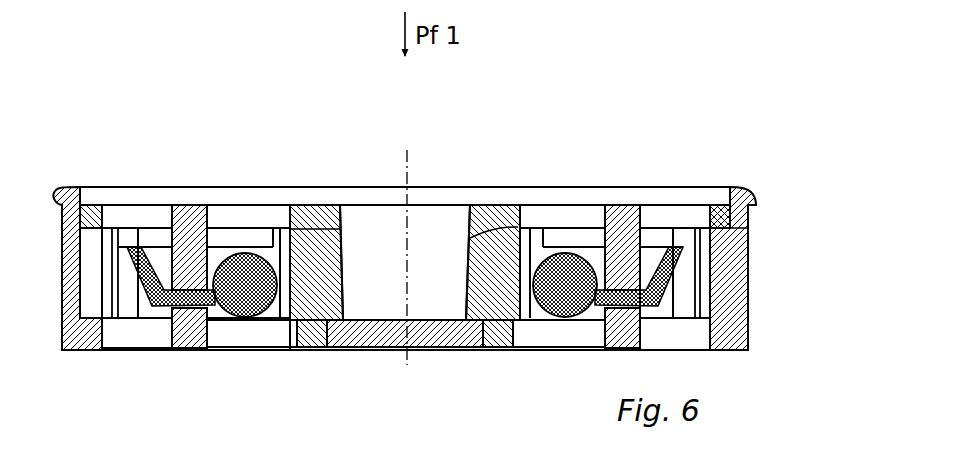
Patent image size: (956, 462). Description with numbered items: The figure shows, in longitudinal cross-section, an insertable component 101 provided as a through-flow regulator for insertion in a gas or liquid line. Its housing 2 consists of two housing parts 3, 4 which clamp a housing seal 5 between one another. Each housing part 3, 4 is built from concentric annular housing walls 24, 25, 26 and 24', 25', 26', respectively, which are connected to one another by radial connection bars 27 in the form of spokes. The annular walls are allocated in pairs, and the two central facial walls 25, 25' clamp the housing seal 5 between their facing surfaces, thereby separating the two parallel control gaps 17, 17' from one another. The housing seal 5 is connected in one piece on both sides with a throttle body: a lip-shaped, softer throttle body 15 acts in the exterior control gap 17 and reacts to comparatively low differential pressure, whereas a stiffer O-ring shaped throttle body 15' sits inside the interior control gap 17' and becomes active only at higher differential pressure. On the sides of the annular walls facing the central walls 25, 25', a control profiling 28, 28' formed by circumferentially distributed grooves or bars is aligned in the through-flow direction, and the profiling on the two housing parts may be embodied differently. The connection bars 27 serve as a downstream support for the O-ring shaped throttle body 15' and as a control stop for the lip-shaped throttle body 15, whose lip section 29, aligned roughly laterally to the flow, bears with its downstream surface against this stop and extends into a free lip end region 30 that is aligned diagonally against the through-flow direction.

The housing 2 is at (776, 203).
The housing part 3 is at (652, 200).
The housing part 4 is at (616, 350).
The housing seal 5 is at (182, 276).
The throttle body 15 is at (420, 249).
The throttle body 15' is at (405, 222).
The control gap 17 is at (398, 253).
The control gap 17' is at (406, 272).
The annular housing wall 24 is at (772, 165).
The annular housing wall 24' is at (742, 359).
The central annular wall 25 is at (667, 168).
The central annular wall 25' is at (559, 335).
The annular housing wall 26 is at (411, 231).
The annular housing wall 26' is at (405, 369).
The connection bar 27 is at (96, 200).
The control profiling 28 is at (430, 314).
The control profiling 28' is at (405, 261).
The lip section 29 is at (163, 321).
The free lip end region 30 is at (405, 218).
The insertable component 101 is at (578, 63).